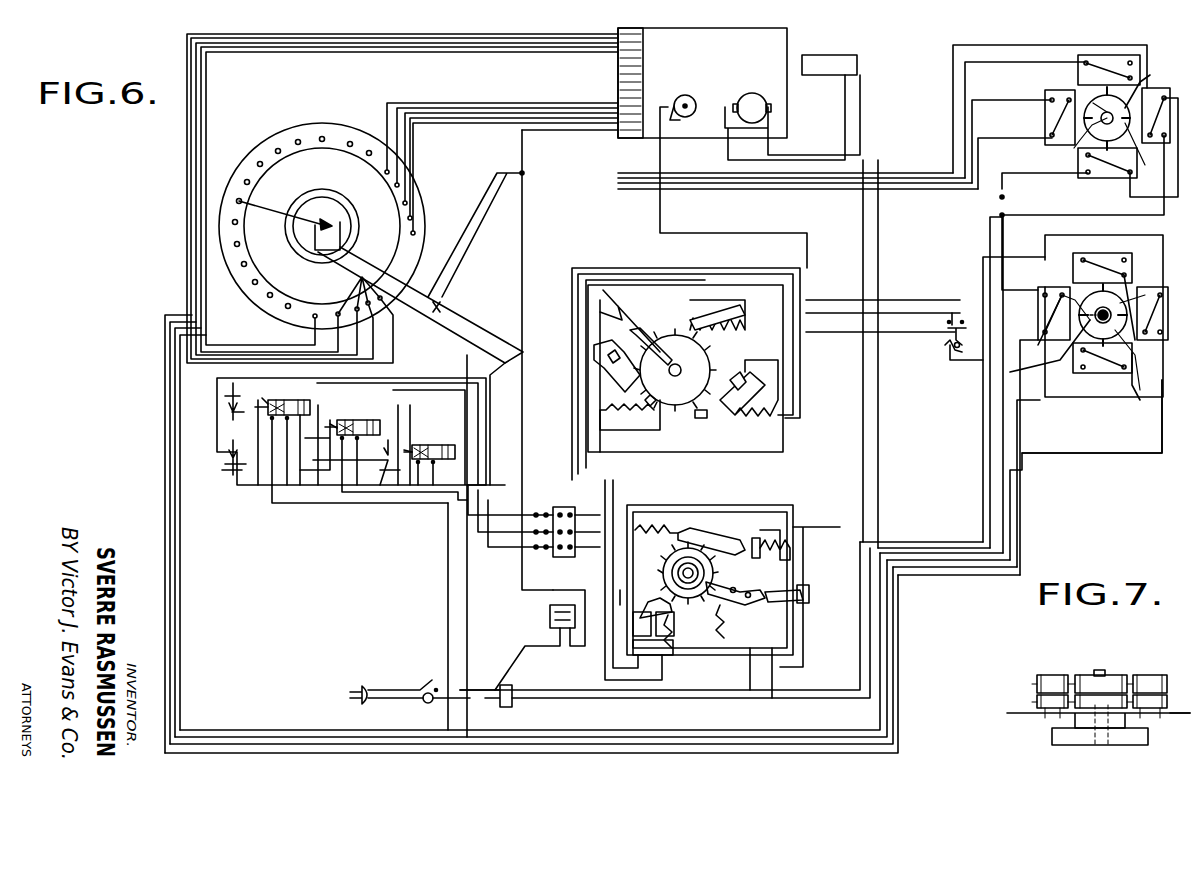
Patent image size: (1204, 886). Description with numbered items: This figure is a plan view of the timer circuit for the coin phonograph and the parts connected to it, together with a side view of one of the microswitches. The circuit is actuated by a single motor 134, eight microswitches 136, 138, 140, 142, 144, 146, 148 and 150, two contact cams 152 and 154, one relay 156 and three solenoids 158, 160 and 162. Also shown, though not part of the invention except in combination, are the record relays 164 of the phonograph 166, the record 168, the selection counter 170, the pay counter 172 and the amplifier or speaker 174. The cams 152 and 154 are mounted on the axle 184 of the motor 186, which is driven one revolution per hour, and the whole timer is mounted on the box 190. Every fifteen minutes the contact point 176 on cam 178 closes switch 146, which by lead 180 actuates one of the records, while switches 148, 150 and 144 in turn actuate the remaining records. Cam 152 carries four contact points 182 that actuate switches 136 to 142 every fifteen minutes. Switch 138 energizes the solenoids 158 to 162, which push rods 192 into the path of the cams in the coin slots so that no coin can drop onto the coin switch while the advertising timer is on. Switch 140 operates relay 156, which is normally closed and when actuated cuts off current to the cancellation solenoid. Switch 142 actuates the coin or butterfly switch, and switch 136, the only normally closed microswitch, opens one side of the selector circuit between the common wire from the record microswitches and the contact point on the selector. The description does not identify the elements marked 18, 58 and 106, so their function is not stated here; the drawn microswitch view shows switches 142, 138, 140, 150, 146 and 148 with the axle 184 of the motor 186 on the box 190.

In FIG. 6, the motor 18 is at (1108, 305).
In FIG. 6, the plug and switch 58 is at (385, 690).
In FIG. 6, the dial 106 is at (332, 135).
In FIG. 6, the motor 134 is at (752, 92).
In FIG. 6, the microswitch 136 is at (1078, 78).
In FIG. 6, the microswitch 138 is at (1160, 95).
In FIG. 7, the microswitch 138 is at (1150, 676).
In FIG. 6, the microswitch 140 is at (1078, 174).
In FIG. 7, the microswitch 140 is at (1118, 676).
In FIG. 6, the microswitch 142 is at (1045, 97).
In FIG. 7, the microswitch 142 is at (1052, 675).
In FIG. 6, the microswitch 144 is at (1090, 265).
In FIG. 6, the microswitch 146 is at (1165, 315).
In FIG. 7, the microswitch 146 is at (1165, 702).
In FIG. 6, the microswitch 148 is at (1093, 363).
In FIG. 7, the microswitch 148 is at (1118, 705).
In FIG. 6, the microswitch 150 is at (1045, 293).
In FIG. 7, the microswitch 150 is at (1050, 720).
In FIG. 6, the contact cam 152 is at (1082, 142).
In FIG. 6, the contact cam 154 is at (1128, 303).
In FIG. 6, the relay 156 is at (948, 352).
In FIG. 6, the solenoid 158 is at (280, 400).
In FIG. 6, the solenoid 160 is at (358, 432).
In FIG. 6, the solenoid 162 is at (440, 452).
In FIG. 6, the record relays 164 is at (645, 78).
In FIG. 6, the phonograph 166 is at (739, 137).
In FIG. 6, the record 168 is at (690, 98).
In FIG. 6, the selection counter 170 is at (653, 292).
In FIG. 6, the pay counter 172 is at (718, 518).
In FIG. 6, the amplifier or speaker 174 is at (838, 58).
In FIG. 6, the contact point 176 is at (1075, 300).
In FIG. 6, the cam 178 is at (1140, 390).
In FIG. 6, the lead 180 is at (1100, 455).
In FIG. 6, the contact points 182 is at (1128, 90).
In FIG. 6, the axle 184 is at (1150, 75).
In FIG. 7, the axle 184 is at (1101, 670).
In FIG. 7, the motor 186 is at (1118, 745).
In FIG. 7, the box 190 is at (1184, 715).
In FIG. 6, the rods 192 is at (262, 398).